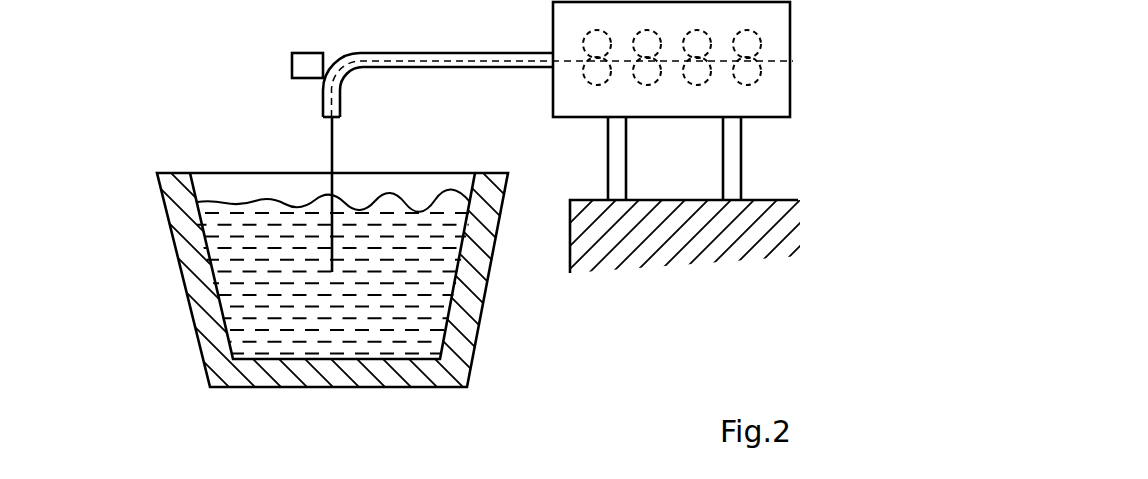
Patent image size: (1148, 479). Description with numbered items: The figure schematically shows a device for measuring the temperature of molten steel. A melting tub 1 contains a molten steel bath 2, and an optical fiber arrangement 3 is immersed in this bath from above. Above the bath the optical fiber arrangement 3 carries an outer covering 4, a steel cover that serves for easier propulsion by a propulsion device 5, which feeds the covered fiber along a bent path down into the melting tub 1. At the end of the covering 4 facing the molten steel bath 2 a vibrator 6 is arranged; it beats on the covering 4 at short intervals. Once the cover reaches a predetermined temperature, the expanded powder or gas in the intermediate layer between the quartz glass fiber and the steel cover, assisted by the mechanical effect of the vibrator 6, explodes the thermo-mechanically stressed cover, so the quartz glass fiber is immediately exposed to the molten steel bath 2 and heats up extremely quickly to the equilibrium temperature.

The melting tub 1 is at (452, 360).
The molten steel bath 2 is at (430, 310).
The optical fiber arrangement 3 is at (337, 145).
The outer covering 4 is at (422, 50).
The propulsion device 5 is at (775, 48).
The vibrator 6 is at (305, 68).